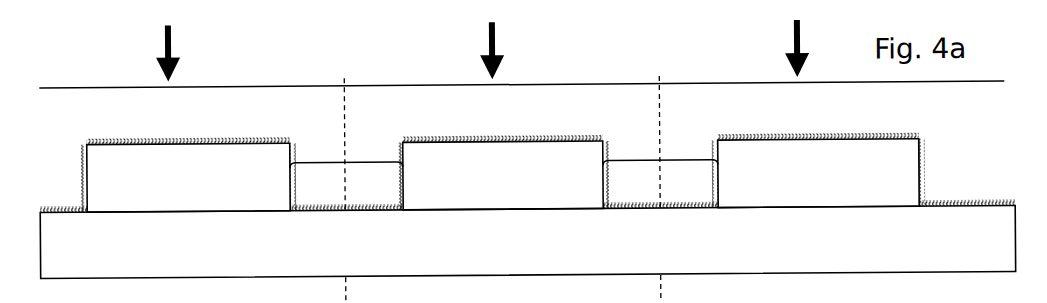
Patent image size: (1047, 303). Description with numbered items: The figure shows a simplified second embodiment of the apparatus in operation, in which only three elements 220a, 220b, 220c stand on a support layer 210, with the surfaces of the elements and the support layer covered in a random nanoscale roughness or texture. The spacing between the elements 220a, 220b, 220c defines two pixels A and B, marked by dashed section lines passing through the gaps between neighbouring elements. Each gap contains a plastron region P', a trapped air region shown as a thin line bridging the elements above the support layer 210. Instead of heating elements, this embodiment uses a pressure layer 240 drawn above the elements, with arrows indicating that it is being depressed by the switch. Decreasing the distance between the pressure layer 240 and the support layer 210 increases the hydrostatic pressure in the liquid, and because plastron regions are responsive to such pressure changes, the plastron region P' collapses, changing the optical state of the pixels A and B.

The pressure layer 240 is at (193, 84).
The element 220a is at (203, 192).
The element 220b is at (520, 192).
The element 220c is at (843, 192).
The plastron region P' is at (503, 126).
The support layer 210 is at (527, 239).
The pixel A is at (348, 169).
The pixel B is at (664, 167).